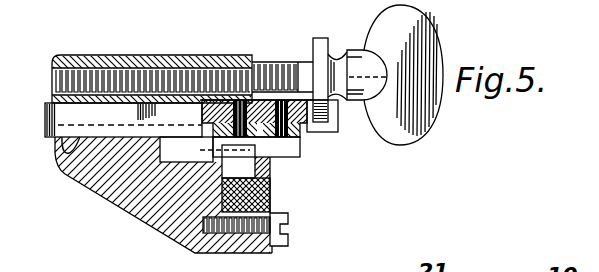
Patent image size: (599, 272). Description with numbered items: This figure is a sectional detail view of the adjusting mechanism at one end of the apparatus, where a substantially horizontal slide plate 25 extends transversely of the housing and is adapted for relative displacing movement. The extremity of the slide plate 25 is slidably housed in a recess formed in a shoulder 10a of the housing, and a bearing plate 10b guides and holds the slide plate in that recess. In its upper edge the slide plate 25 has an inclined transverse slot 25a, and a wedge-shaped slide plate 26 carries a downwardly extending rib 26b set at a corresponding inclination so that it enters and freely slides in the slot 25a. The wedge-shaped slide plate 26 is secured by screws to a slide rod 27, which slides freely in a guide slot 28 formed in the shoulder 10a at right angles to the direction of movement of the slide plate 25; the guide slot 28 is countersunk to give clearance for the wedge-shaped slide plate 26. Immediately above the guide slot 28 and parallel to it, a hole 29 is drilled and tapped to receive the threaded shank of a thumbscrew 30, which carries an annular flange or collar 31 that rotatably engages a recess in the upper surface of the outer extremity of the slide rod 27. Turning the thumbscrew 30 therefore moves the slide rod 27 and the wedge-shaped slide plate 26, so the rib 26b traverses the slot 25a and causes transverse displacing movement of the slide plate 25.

The hole 29 is at (83, 71).
The thumbscrew 30 is at (267, 69).
The annular flange or collar 31 is at (327, 39).
The slide rod 27 is at (339, 118).
The guide slot 28 is at (60, 151).
The shoulder 10a is at (107, 195).
The transverse slot 25a is at (213, 153).
The wedge-shaped slide plate 26 is at (301, 141).
The rib 26b is at (278, 151).
The slide plate 25 is at (273, 199).
The bearing plate 10b is at (272, 250).